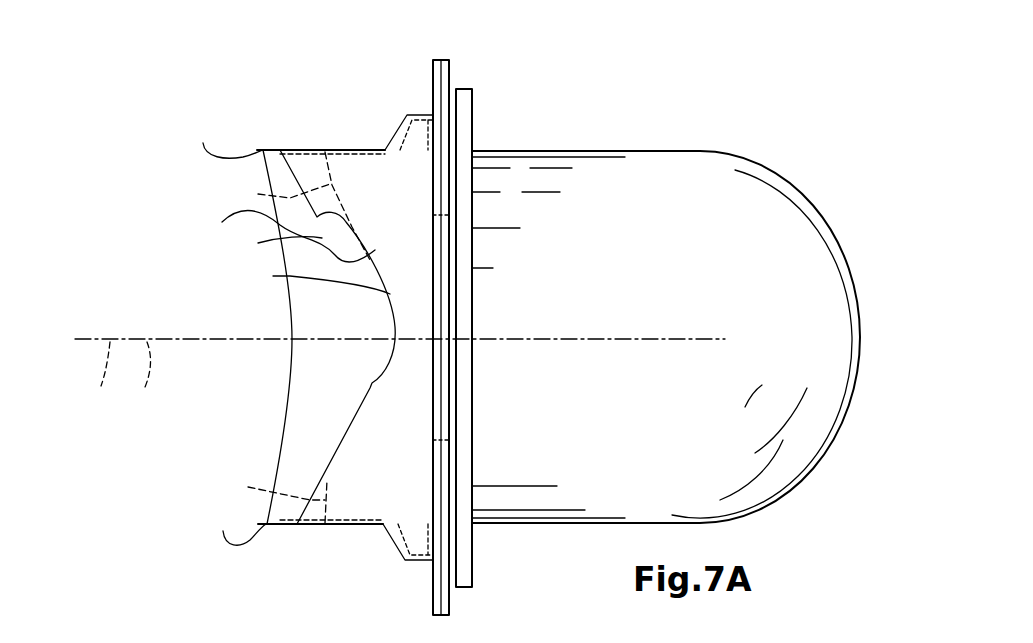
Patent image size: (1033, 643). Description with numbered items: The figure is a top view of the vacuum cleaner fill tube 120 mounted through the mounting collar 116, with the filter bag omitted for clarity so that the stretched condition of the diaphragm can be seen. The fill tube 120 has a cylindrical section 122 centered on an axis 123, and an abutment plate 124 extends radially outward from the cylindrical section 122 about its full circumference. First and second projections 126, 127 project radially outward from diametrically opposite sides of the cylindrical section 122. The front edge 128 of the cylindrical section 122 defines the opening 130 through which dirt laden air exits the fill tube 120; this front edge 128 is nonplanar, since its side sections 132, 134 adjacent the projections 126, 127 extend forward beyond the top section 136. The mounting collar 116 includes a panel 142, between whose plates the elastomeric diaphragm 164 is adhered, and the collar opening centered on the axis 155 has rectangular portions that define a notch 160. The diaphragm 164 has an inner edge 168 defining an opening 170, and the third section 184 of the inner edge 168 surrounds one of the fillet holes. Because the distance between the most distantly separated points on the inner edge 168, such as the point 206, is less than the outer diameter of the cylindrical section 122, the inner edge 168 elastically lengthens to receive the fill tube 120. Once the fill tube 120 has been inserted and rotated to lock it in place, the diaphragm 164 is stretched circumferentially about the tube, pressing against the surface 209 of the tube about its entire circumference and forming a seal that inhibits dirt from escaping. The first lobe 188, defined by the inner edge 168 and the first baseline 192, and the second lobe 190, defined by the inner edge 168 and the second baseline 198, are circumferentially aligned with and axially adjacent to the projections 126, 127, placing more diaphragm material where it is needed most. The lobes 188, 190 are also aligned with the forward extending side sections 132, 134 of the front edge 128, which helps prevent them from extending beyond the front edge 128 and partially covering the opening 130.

The mounting collar 116 is at (646, 310).
The panel 142 is at (466, 67).
The abutment plate 124 is at (473, 117).
The notch 160 is at (466, 197).
The fill tube 120 is at (191, 320).
The axis 155 is at (82, 372).
The axis 123 is at (142, 379).
The opening 130 is at (278, 310).
The front edge 128 is at (283, 445).
The top section 136 is at (291, 340).
The opening 170 is at (322, 399).
The inner edge 168 is at (328, 432).
The surface 209 is at (277, 236).
The third section 184 is at (269, 243).
The point 206 is at (309, 279).
The first baseline 192 is at (293, 206).
The second baseline 198 is at (267, 498).
The first lobe 188 is at (302, 150).
The side section 132 is at (222, 140).
The first projection 126 is at (410, 138).
The cylindrical section 122 is at (268, 526).
The side section 134 is at (229, 526).
The second lobe 190 is at (310, 526).
The elastomeric diaphragm 164 is at (362, 526).
The second projection 127 is at (400, 538).